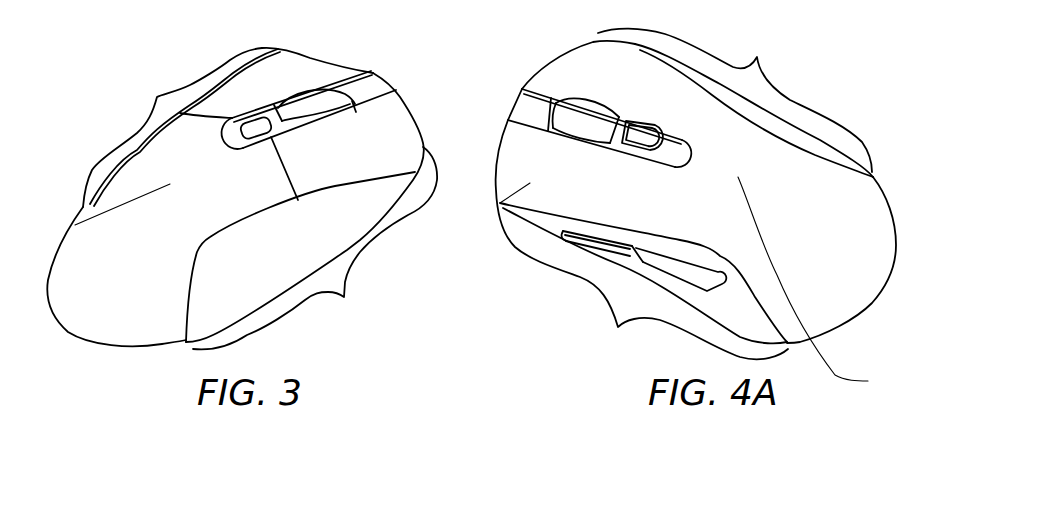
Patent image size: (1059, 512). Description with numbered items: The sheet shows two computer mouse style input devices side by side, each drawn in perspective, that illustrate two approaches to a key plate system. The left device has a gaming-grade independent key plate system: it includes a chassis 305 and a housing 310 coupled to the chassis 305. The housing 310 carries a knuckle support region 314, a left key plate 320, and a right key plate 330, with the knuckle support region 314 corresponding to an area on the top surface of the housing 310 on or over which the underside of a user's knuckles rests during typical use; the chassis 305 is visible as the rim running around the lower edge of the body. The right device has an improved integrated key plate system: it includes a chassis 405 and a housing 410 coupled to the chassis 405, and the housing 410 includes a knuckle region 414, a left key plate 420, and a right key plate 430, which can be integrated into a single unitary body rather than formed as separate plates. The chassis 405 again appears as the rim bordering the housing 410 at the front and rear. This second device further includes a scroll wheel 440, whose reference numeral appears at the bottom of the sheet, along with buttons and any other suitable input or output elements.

In FIG. 3, the chassis 305 is at (157, 100).
In FIG. 3, the housing 310 is at (118, 306).
In FIG. 3, the knuckle support region 314 is at (75, 225).
In FIG. 3, the left key plate 320 is at (283, 72).
In FIG. 3, the right key plate 330 is at (387, 120).
In FIG. 4A, the chassis 405 is at (757, 58).
In FIG. 4A, the housing 410 is at (823, 303).
In FIG. 4A, the knuckle region 414 is at (868, 381).
In FIG. 4A, the left key plate 420 is at (500, 204).
In FIG. 4A, the right key plate 430 is at (610, 72).
In FIG. 4A, the scroll wheel 440 is at (497, 511).